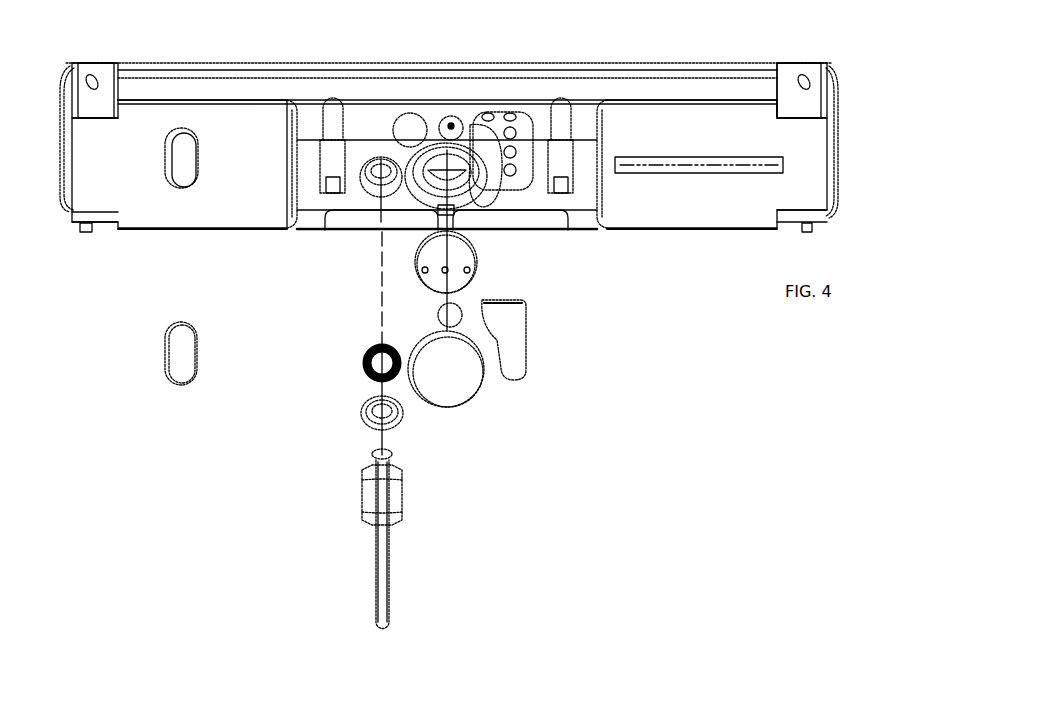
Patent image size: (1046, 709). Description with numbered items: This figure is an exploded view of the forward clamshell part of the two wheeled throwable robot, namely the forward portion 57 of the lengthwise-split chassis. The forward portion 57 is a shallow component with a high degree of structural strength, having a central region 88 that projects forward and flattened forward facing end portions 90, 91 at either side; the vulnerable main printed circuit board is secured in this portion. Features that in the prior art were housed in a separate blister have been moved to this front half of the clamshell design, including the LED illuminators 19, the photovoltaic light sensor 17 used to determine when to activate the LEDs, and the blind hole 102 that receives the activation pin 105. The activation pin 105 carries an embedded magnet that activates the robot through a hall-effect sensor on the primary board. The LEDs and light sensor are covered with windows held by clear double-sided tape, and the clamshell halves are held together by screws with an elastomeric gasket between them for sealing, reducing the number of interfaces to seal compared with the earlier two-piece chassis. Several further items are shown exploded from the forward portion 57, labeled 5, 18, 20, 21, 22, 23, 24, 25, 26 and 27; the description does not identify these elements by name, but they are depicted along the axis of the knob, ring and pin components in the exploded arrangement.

The fastener opening 5 is at (349, 114).
The photovoltaic light sensor 17 is at (451, 124).
The slot 18 is at (232, 209).
The LED illuminators 19 is at (561, 210).
The ball 20 is at (438, 317).
The retainer disc 21 is at (524, 304).
The clip 22 is at (550, 354).
The cover plug 23 is at (141, 369).
The cap disc 24 is at (508, 396).
The O-ring 25 is at (317, 393).
The nut 26 is at (444, 456).
The rod 27 is at (439, 560).
The forward portion 57 is at (675, 217).
The central region 88 is at (537, 100).
The flattened forward facing end portion 90 is at (150, 190).
The flattened forward facing end portion 91 is at (745, 192).
The blind hole 102 is at (361, 133).
The activation pin 105 is at (390, 552).